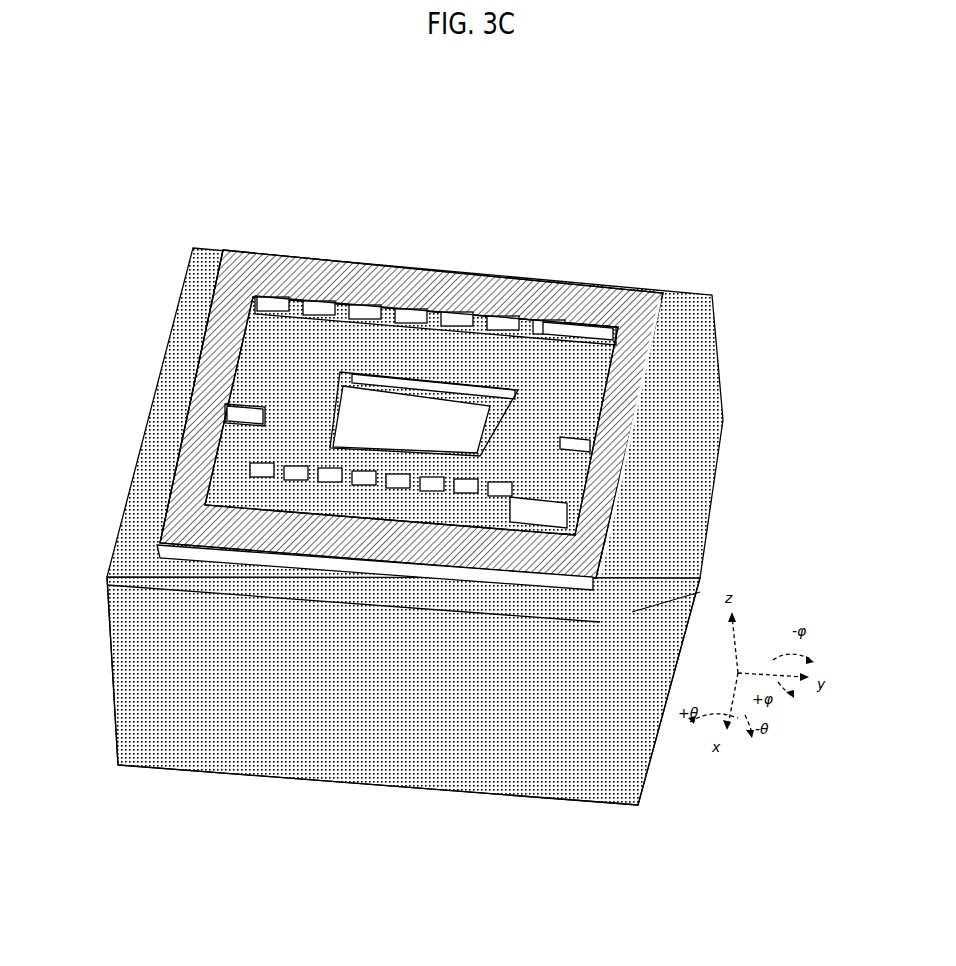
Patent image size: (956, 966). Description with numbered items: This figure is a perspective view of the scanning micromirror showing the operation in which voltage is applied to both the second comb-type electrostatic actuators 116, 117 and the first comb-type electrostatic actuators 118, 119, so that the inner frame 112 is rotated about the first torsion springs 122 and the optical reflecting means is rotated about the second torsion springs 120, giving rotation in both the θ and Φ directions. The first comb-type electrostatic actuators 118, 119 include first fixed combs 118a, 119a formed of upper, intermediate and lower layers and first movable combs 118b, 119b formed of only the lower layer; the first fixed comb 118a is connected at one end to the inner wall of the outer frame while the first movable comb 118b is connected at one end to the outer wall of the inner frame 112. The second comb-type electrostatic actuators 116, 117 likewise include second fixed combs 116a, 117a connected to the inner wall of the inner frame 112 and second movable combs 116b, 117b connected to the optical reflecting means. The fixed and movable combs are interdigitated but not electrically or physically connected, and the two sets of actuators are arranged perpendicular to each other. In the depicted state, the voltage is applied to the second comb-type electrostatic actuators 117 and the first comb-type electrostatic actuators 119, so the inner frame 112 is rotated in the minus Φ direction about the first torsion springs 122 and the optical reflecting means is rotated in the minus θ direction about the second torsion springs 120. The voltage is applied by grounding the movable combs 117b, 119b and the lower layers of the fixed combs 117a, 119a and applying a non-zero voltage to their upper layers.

The inner frame 112 is at (300, 290).
The second torsion springs 120 is at (430, 285).
The first fixed comb 118a is at (533, 288).
The first movable comb 118b is at (587, 288).
The first comb-type electrostatic actuator 118 is at (680, 222).
The first torsion springs 122 is at (203, 340).
The second comb-type electrostatic actuator 117 is at (72, 438).
The second fixed comb 117a is at (300, 412).
The second movable comb 117b is at (285, 487).
The second fixed comb 116a is at (560, 398).
The second movable comb 116b is at (600, 464).
The second comb-type electrostatic actuator 116 is at (786, 404).
The first comb-type electrostatic actuator 119 is at (143, 800).
The first fixed comb 119a is at (232, 568).
The first movable comb 119b is at (305, 582).